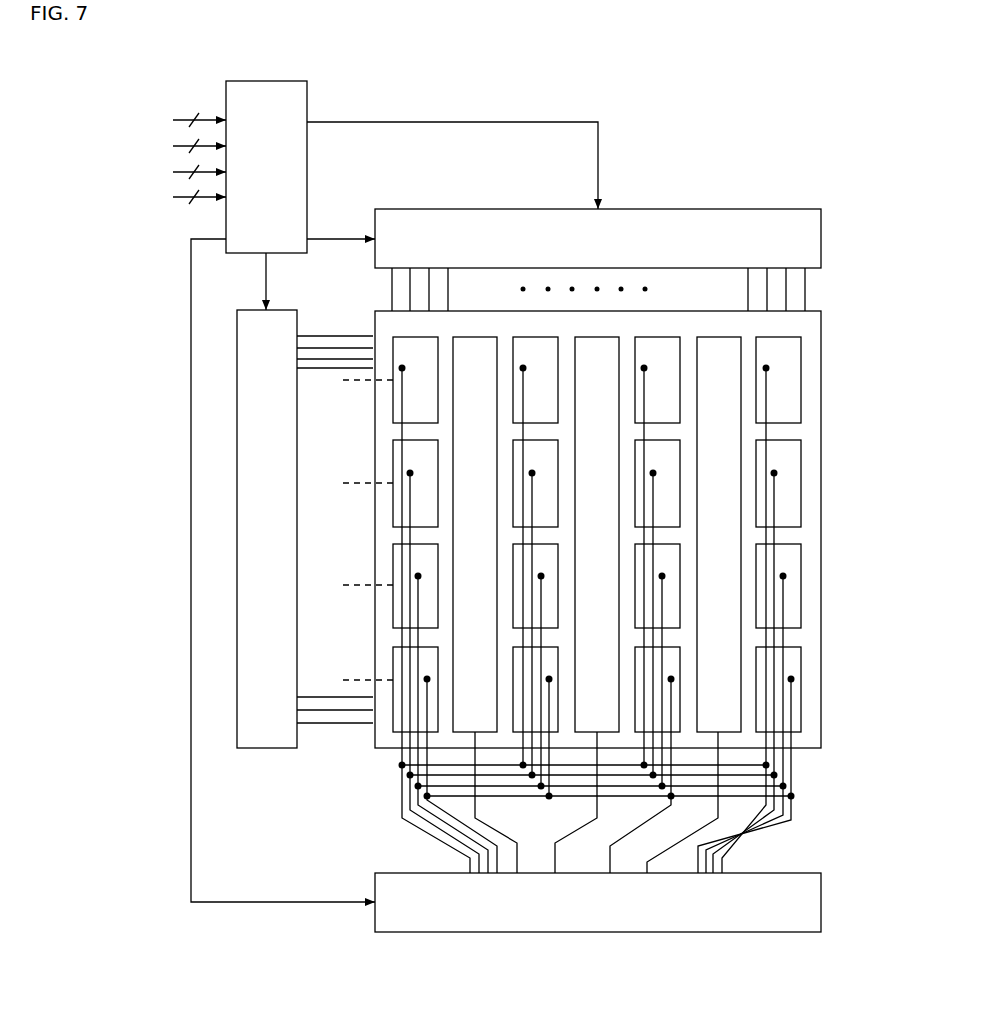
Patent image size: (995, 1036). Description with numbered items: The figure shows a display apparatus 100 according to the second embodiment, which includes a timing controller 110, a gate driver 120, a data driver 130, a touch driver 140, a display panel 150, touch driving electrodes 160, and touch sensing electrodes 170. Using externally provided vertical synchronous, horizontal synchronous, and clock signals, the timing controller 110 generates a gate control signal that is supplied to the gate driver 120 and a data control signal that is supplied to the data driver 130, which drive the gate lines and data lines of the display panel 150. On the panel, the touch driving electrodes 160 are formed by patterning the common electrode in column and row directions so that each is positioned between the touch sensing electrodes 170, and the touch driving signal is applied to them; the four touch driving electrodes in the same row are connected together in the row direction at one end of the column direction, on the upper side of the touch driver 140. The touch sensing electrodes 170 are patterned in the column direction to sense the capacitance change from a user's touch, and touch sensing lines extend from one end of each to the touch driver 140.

The display device 100 is at (739, 56).
The timing controller 110 is at (283, 176).
The gate driver 120 is at (283, 539).
The data driver 130 is at (612, 247).
The touch driver 140 is at (612, 912).
The display panel 150 is at (820, 303).
The touch driving electrode 160 is at (684, 337).
The touch sensing electrode 170 is at (740, 350).